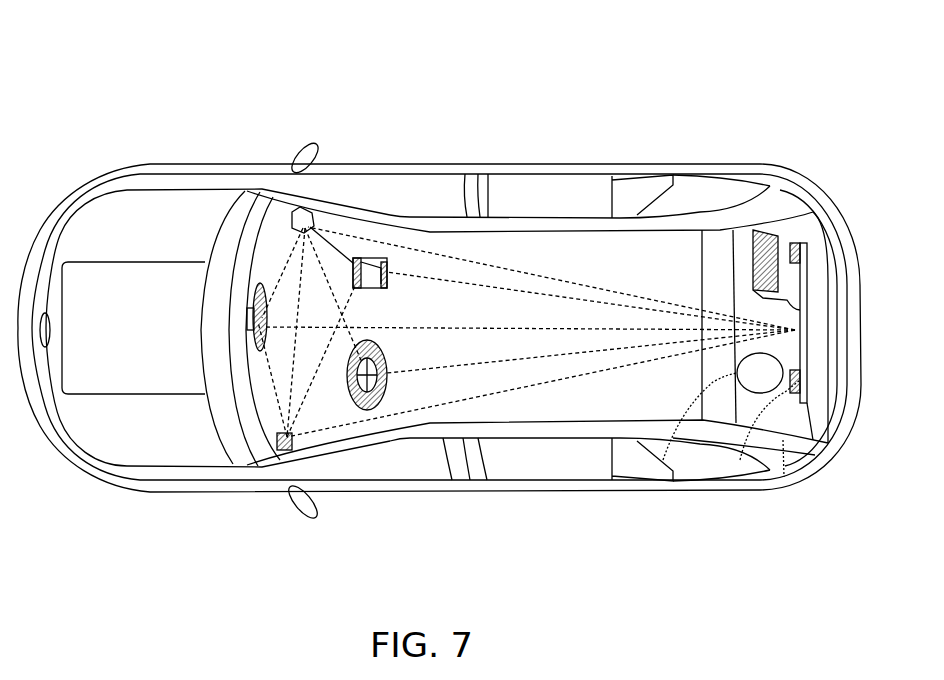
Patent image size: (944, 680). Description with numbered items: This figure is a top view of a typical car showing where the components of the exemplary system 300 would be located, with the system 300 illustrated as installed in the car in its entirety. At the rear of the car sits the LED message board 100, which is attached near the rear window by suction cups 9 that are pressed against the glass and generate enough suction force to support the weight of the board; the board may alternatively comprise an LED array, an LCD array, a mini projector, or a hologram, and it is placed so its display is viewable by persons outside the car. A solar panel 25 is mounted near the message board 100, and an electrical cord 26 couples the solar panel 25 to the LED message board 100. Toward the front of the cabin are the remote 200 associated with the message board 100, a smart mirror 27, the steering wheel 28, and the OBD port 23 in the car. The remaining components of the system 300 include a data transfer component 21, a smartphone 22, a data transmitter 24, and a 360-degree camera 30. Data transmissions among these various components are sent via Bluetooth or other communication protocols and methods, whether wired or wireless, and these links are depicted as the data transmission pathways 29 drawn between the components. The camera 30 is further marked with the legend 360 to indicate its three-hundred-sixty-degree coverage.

The system 300 is at (160, 76).
The remote 200 is at (272, 310).
The data transfer component 21 is at (442, 207).
The smartphone 22 is at (442, 207).
The data transmitter 24 is at (386, 258).
The smart mirror 27 is at (250, 300).
The steering wheel 28 is at (392, 382).
The OBD port 23 is at (277, 438).
The data transmission pathways 29 is at (605, 416).
The solar panel 25 is at (742, 233).
The electrical cord 26 is at (808, 293).
The 360 degree sensing zone 360 is at (760, 373).
The 360-degree camera 30 is at (663, 460).
The suction cups 9 is at (740, 460).
The LED message board 100 is at (784, 477).